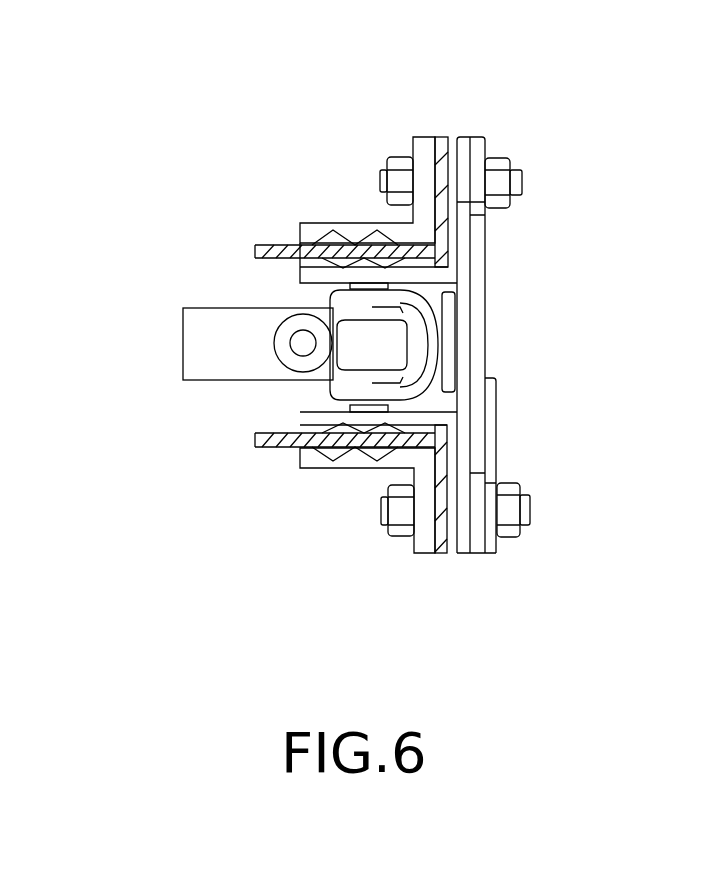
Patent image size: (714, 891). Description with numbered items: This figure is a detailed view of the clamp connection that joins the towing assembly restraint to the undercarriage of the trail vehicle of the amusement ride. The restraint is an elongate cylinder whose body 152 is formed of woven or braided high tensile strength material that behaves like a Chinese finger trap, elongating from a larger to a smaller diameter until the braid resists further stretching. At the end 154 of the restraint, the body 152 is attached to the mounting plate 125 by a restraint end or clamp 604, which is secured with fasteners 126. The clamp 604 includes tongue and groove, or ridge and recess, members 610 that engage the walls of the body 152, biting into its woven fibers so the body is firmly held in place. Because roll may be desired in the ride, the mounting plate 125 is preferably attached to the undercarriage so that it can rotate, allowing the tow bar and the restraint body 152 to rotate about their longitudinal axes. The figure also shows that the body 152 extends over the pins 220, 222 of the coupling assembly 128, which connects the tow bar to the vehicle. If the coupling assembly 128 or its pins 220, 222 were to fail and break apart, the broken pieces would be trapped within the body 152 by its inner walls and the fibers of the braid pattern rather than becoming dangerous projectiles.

The restraint end/clamp 604 is at (453, 140).
The tongue and groove members 610 is at (357, 194).
The body 152 is at (257, 246).
The end 154 is at (440, 552).
The mounting plate 125 is at (462, 557).
The fasteners 126 is at (518, 172).
The pin 222 is at (330, 292).
The pin 220 is at (297, 343).
The coupling assembly 128 is at (161, 435).